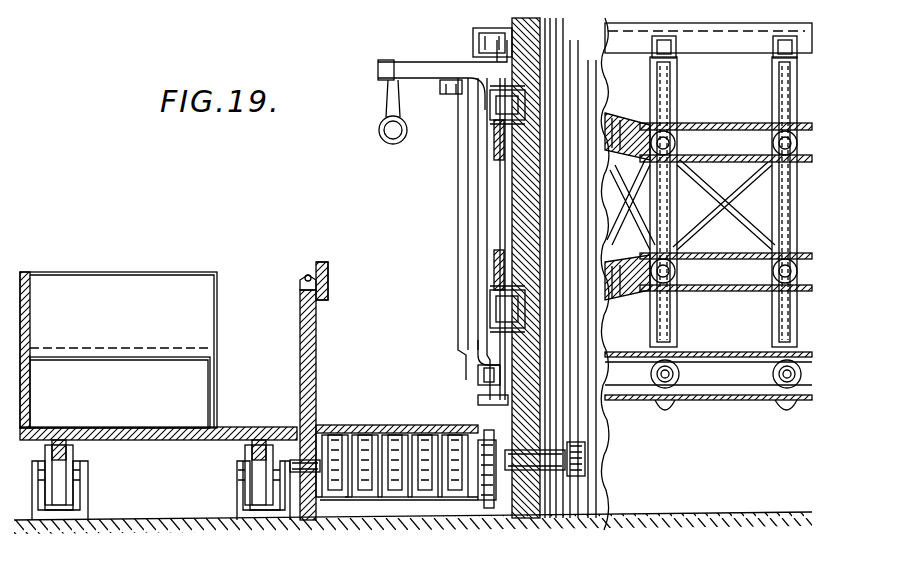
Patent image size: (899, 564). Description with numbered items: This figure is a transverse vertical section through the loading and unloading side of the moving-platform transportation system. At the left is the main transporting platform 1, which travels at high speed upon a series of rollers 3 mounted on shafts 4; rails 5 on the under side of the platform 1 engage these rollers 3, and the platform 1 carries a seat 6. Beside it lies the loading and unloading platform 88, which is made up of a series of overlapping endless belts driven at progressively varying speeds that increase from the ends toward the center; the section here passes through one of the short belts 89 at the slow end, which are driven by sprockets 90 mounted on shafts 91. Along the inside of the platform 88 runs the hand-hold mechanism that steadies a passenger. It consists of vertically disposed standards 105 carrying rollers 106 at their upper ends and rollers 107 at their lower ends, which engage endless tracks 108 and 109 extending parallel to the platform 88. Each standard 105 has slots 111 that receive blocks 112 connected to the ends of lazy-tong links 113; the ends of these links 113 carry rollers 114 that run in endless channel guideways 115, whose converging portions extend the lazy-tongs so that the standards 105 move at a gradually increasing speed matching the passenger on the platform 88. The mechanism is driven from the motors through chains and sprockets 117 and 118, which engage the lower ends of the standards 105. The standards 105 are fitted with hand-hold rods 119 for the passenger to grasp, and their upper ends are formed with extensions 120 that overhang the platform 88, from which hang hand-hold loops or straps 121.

The platform 1 is at (250, 432).
The rollers 3 is at (70, 462).
The shafts 4 is at (62, 490).
The rails 5 is at (60, 455).
The seats 6 is at (108, 290).
The loading and unloading platform 88 is at (397, 443).
The short belts 89 is at (345, 435).
The sprockets 90 is at (355, 495).
The shafts 91 is at (535, 470).
The standards 105 is at (478, 348).
The rollers 106 is at (473, 42).
The rollers 107 is at (480, 376).
The endless track 108 is at (492, 30).
The endless track 109 is at (505, 400).
The slots 111 is at (492, 325).
The blocks 112 is at (490, 100).
The lazy-tong links 113 is at (505, 198).
The rollers 114 is at (515, 100).
The endless channel guideways 115 is at (500, 130).
The chains and sprockets 117 is at (488, 500).
The chains and sprockets 118 is at (480, 490).
The hand-hold rods 119 is at (460, 228).
The extensions 120 is at (412, 68).
The hand-hold loops or straps 121 is at (385, 138).